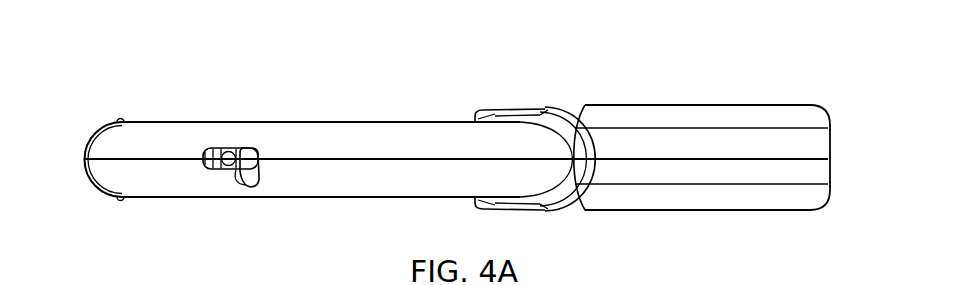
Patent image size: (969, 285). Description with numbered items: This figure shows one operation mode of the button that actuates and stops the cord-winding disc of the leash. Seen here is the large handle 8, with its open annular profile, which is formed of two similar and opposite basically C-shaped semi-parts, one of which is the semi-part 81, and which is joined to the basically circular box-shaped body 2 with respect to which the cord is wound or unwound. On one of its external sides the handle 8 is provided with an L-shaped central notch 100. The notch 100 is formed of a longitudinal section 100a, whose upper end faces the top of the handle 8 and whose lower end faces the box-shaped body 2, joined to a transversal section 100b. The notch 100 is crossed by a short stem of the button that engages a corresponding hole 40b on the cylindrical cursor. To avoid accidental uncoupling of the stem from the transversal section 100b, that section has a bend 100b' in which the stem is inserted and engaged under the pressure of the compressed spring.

The handle 8 is at (96, 125).
The L-shaped central notch 100 is at (253, 147).
The longitudinal section 100a is at (220, 152).
The hole 40b is at (226, 164).
The transversal section 100b is at (307, 208).
The bend 100b' is at (208, 227).
The C-shaped semi-part 81 is at (525, 137).
The box-shaped body 2 is at (752, 118).